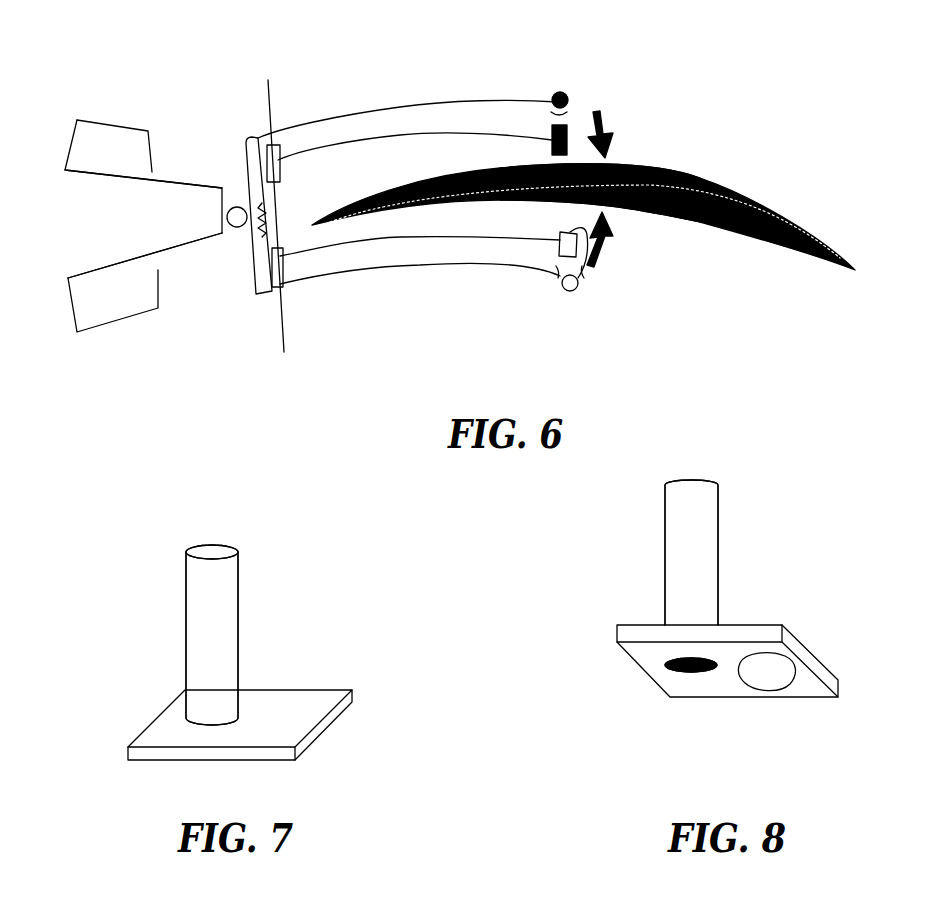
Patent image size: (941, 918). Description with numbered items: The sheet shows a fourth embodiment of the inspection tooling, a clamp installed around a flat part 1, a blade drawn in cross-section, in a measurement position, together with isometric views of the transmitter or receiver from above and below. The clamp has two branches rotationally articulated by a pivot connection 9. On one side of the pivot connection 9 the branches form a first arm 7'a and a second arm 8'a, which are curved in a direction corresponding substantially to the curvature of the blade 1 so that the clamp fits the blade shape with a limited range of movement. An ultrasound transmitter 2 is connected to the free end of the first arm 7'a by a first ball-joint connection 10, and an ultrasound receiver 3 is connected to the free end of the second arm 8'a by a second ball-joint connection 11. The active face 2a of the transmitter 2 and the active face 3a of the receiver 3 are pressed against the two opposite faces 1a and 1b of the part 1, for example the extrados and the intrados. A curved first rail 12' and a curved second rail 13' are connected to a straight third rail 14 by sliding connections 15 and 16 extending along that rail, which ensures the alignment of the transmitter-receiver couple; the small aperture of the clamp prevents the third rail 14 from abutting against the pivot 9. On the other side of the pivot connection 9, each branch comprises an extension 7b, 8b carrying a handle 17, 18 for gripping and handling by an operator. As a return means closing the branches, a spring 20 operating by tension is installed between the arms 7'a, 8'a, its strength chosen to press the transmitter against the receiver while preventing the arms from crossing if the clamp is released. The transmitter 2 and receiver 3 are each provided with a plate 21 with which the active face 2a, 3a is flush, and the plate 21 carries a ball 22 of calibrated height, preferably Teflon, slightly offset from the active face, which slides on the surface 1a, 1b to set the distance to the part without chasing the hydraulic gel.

In FIG. 6, the flat part 1 is at (735, 195).
In FIG. 6, the face 1a is at (667, 168).
In FIG. 6, the face 1b is at (661, 213).
In FIG. 6, the ultrasound transmitter 2 is at (572, 135).
In FIG. 7, the ultrasound transmitter 2 is at (185, 553).
In FIG. 8, the ultrasound transmitter 2 is at (678, 532).
In FIG. 6, the active face 2a is at (567, 153).
In FIG. 8, the active face 2a is at (670, 670).
In FIG. 6, the ultrasound receiver 3 is at (583, 267).
In FIG. 7, the ultrasound receiver 3 is at (185, 553).
In FIG. 8, the ultrasound receiver 3 is at (678, 532).
In FIG. 6, the active face 3a is at (600, 240).
In FIG. 8, the active face 3a is at (670, 670).
In FIG. 6, the arm 7'a is at (408, 98).
In FIG. 6, the extension 7b is at (187, 247).
In FIG. 6, the arm 8'a is at (420, 279).
In FIG. 6, the extension 8b is at (193, 188).
In FIG. 6, the pivot connection 9 is at (234, 207).
In FIG. 6, the first ball-joint connection 10 is at (560, 92).
In FIG. 6, the second ball-joint connection 11 is at (566, 292).
In FIG. 6, the first rail 12' is at (415, 109).
In FIG. 6, the second rail 13' is at (420, 291).
In FIG. 6, the third rail 14 is at (278, 224).
In FIG. 6, the sliding connection 15 is at (263, 153).
In FIG. 6, the sliding connection 16 is at (270, 277).
In FIG. 6, the handle 17 is at (127, 313).
In FIG. 6, the handle 18 is at (113, 123).
In FIG. 6, the spring 20 is at (256, 222).
In FIG. 7, the plate 21 is at (287, 710).
In FIG. 8, the plate 21 is at (705, 687).
In FIG. 8, the ball 22 is at (797, 677).